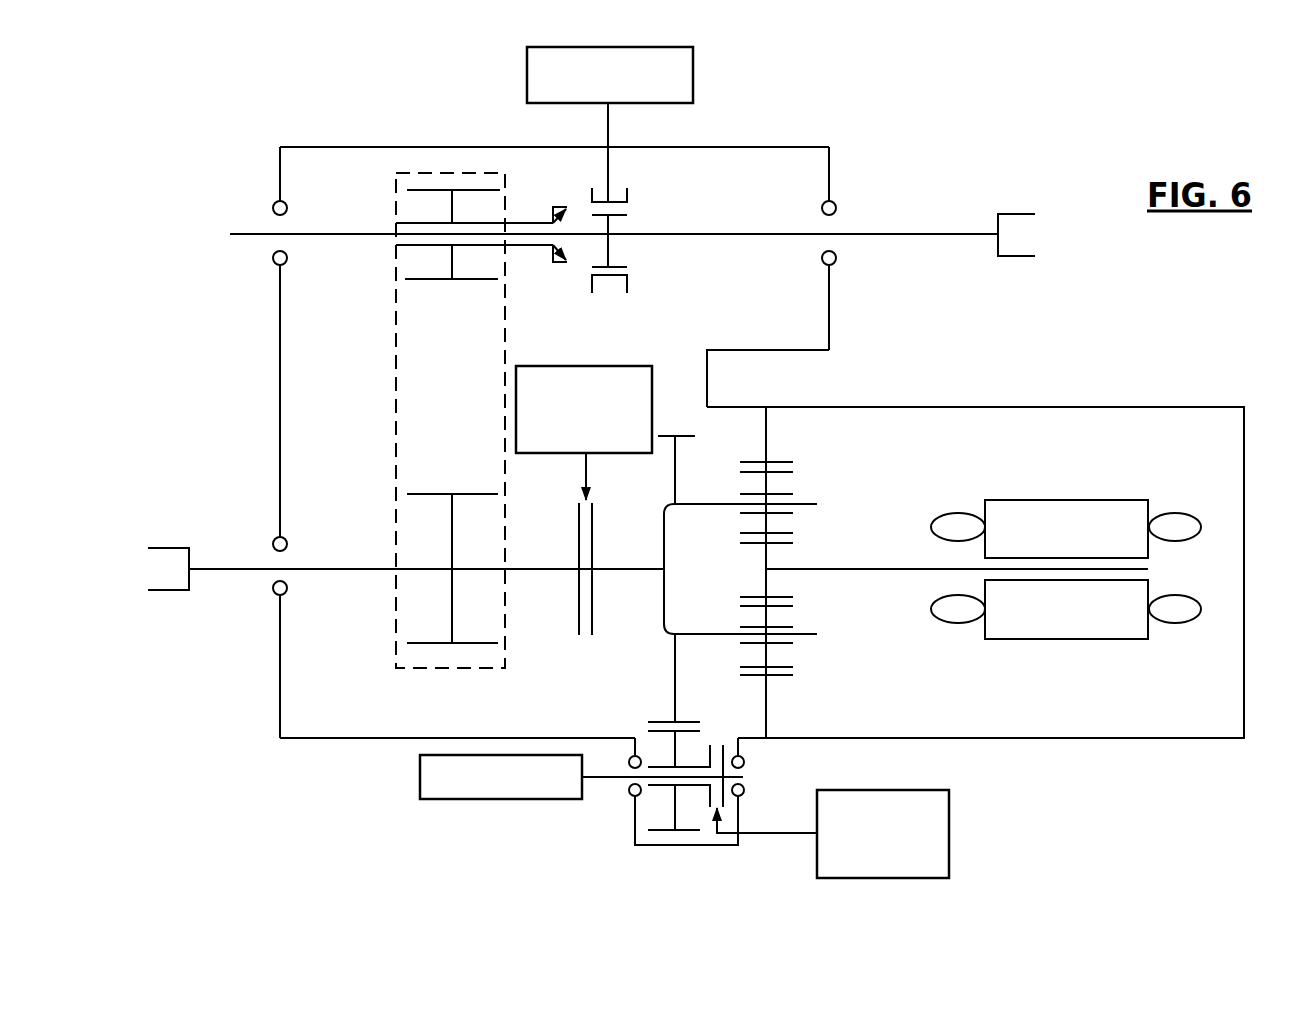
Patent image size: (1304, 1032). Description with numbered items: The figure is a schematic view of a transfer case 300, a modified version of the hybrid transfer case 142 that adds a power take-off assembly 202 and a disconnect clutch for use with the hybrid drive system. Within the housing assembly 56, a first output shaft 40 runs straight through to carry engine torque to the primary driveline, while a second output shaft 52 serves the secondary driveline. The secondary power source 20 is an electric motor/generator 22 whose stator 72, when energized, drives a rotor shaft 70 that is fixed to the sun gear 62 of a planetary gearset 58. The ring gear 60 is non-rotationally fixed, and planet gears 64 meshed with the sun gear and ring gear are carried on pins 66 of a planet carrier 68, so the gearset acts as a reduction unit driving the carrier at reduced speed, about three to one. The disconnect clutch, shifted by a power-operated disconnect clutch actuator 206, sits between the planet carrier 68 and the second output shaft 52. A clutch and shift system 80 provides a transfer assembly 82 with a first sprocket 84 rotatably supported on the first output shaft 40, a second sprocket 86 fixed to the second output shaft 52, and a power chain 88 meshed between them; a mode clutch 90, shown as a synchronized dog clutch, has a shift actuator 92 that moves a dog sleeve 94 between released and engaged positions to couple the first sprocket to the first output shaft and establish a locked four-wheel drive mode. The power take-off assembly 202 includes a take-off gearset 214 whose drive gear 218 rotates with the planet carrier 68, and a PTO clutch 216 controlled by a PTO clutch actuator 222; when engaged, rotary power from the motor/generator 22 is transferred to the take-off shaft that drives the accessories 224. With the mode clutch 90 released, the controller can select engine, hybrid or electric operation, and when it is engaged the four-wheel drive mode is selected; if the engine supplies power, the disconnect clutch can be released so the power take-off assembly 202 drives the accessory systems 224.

The secondary power source 20 is at (946, 706).
The electric motor/generator 22 is at (1079, 525).
The first output shaft 40 is at (917, 228).
The second output shaft 52 is at (222, 572).
The housing assembly 56 is at (1247, 628).
The planetary gearset 58 is at (848, 572).
The ring gear 60 is at (767, 430).
The sun gear 62 is at (768, 557).
The planet gears 64 is at (771, 653).
The pins 66 is at (798, 500).
The planet carrier 68 is at (663, 530).
The rotor shaft 70 is at (897, 568).
The stator 72 is at (1080, 640).
The clutch and shift system 80 is at (676, 176).
The transfer assembly 82 is at (363, 368).
The first sprocket 84 is at (417, 222).
The second sprocket 86 is at (452, 605).
The power chain 88 is at (420, 670).
The mode clutch 90 is at (578, 282).
The shift actuator 92 is at (686, 79).
The dog sleeve 94 is at (630, 285).
The hybrid transfer case 142 is at (903, 150).
The power take-off assembly 202 is at (689, 780).
The disconnect clutch actuator 206 is at (575, 366).
The take-off gearset 214 is at (638, 720).
The PTO clutch 216 is at (724, 726).
The drive gear 218 is at (668, 434).
The PTO clutch actuator 222 is at (951, 843).
The accessories 224 is at (487, 800).
The transfer case 300 is at (1053, 372).